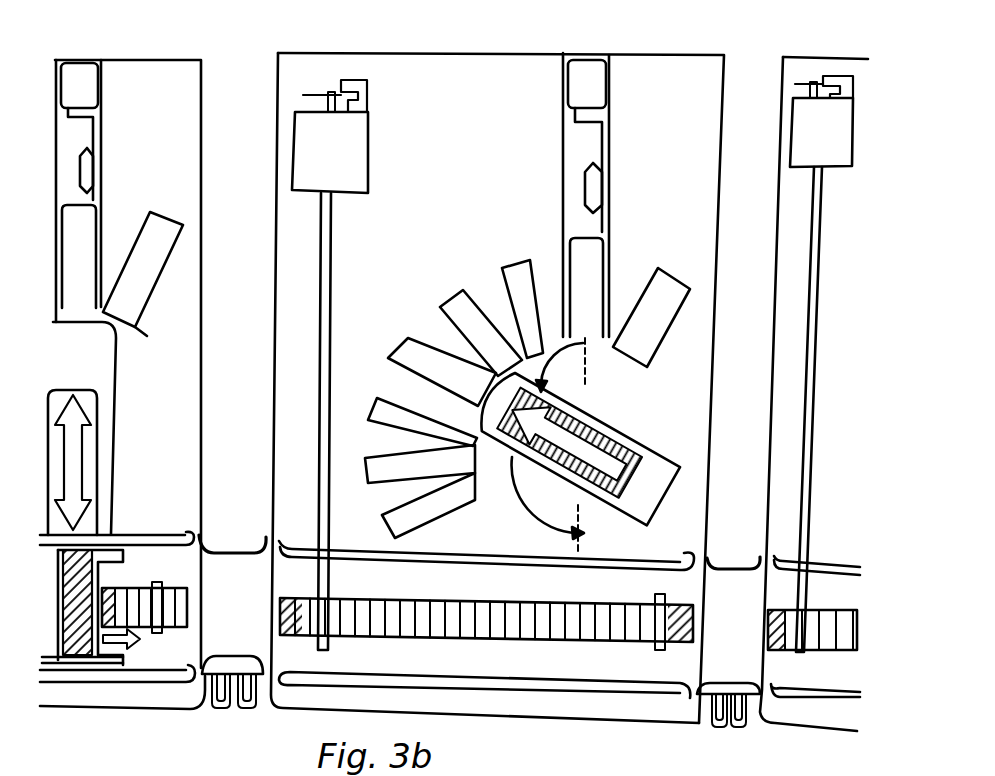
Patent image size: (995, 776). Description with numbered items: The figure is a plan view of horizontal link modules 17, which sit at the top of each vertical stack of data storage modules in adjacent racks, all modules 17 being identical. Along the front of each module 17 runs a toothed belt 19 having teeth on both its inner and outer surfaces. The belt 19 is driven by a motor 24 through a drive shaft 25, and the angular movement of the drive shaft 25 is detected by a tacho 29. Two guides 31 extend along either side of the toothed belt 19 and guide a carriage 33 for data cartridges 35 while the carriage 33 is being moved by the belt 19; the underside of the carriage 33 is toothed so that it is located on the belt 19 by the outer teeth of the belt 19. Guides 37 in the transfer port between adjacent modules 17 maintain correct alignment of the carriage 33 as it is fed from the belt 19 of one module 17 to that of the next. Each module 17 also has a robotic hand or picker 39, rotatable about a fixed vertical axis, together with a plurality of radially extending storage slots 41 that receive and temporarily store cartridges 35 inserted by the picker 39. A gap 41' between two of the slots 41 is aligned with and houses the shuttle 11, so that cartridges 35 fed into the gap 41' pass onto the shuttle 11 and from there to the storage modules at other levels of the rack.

The shuttle 11 is at (72, 54).
The horizontal link module 17 is at (695, 78).
The toothed belt 19 is at (423, 603).
The motor 24 is at (360, 158).
The drive shaft 25 is at (331, 320).
The tacho 29 is at (341, 82).
The guides 31 is at (147, 534).
The carriage 33 is at (103, 660).
The data cartridge 35 is at (593, 430).
The guides 37 is at (232, 540).
The robotic hand or picker 39 is at (652, 451).
The storage slots 41 is at (396, 381).
The gap 41' is at (608, 274).